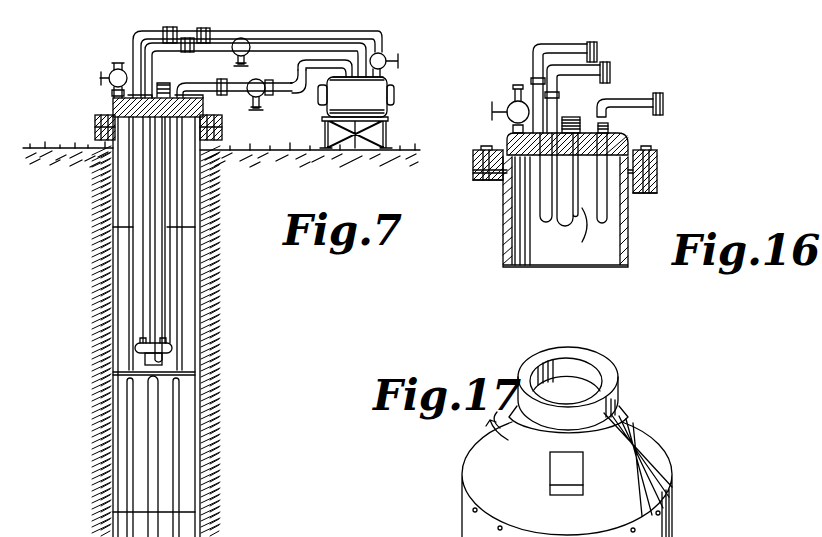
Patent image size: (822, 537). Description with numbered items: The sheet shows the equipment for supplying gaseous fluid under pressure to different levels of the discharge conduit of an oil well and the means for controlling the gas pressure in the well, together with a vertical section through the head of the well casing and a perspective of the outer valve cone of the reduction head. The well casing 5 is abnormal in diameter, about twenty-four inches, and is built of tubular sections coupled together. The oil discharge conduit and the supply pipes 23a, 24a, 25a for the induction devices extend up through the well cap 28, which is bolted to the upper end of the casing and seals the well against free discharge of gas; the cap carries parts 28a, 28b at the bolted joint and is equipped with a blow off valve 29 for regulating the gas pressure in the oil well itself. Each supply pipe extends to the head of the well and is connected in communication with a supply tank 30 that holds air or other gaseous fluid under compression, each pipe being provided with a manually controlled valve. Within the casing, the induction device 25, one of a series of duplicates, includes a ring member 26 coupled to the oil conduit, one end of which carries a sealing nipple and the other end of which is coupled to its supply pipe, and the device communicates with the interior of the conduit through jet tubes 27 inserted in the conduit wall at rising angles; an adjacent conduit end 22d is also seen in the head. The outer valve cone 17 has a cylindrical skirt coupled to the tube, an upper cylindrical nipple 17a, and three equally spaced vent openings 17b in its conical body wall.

In FIG. 16, the well casing 5 is at (505, 241).
In FIG. 17, the outer valve cone 17 is at (640, 457).
In FIG. 17, the nipple 17a is at (622, 387).
In FIG. 17, the vent openings 17b is at (557, 466).
In FIG. 16, the conduit end 22d is at (572, 235).
In FIG. 16, the supply pipe 23a is at (545, 195).
In FIG. 16, the supply pipe 24a is at (560, 210).
In FIG. 7, the induction device 25 is at (197, 363).
In FIG. 7, the supply pipe 25a is at (145, 294).
In FIG. 16, the supply pipe 25a is at (603, 199).
In FIG. 7, the ring member 26 is at (150, 358).
In FIG. 7, the jet tubes 27 is at (143, 343).
In FIG. 7, the well cap 28 is at (113, 104).
In FIG. 16, the well cap 28 is at (627, 143).
In FIG. 7, the clamp ring 28a is at (95, 133).
In FIG. 16, the clamp ring 28a is at (640, 196).
In FIG. 7, the bolt 28b is at (222, 125).
In FIG. 16, the bolt 28b is at (585, 169).
In FIG. 7, the blow off valve 29 is at (110, 74).
In FIG. 16, the blow off valve 29 is at (507, 120).
In FIG. 7, the supply source or tank 30 is at (365, 95).